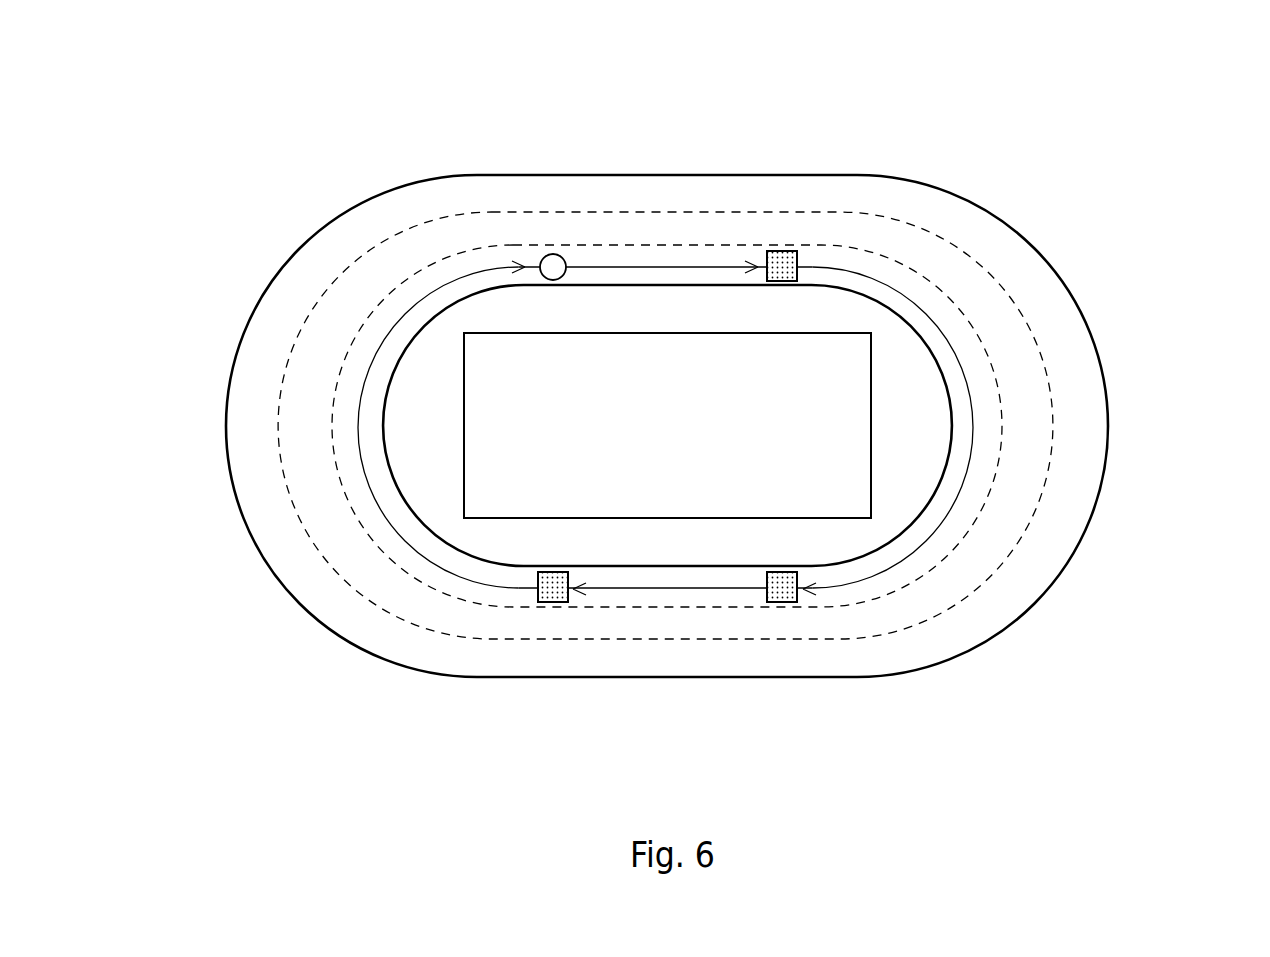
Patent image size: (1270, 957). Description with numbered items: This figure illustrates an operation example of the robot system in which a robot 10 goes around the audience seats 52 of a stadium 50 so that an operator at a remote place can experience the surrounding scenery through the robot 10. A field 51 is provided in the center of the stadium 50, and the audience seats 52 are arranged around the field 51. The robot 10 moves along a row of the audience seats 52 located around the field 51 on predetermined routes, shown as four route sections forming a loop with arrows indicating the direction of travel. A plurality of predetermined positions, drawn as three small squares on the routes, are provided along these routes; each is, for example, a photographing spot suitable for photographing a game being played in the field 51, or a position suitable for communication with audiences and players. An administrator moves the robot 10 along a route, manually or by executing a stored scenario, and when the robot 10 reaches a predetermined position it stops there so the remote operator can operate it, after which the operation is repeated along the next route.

The stadium 50 is at (986, 125).
The audience seats 52 is at (1040, 273).
The field 51 is at (687, 442).
The robot 10 is at (555, 262).